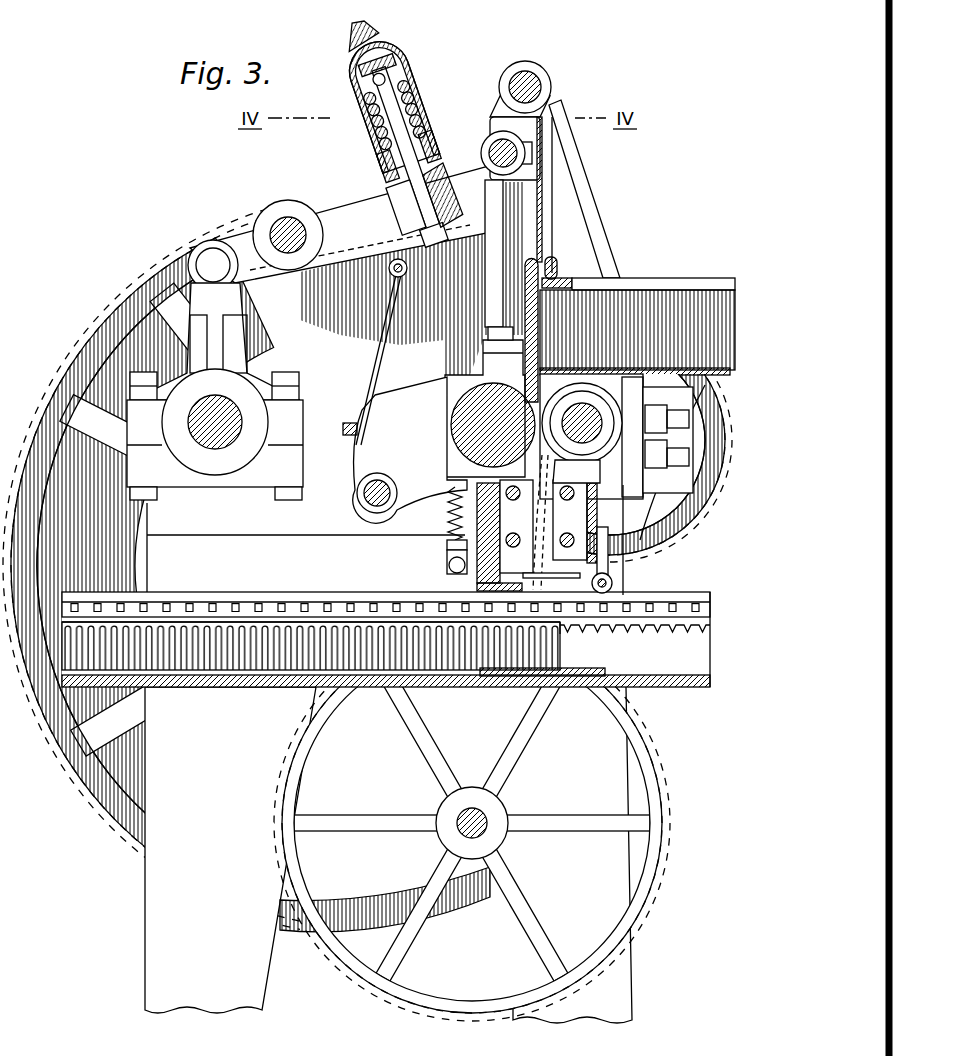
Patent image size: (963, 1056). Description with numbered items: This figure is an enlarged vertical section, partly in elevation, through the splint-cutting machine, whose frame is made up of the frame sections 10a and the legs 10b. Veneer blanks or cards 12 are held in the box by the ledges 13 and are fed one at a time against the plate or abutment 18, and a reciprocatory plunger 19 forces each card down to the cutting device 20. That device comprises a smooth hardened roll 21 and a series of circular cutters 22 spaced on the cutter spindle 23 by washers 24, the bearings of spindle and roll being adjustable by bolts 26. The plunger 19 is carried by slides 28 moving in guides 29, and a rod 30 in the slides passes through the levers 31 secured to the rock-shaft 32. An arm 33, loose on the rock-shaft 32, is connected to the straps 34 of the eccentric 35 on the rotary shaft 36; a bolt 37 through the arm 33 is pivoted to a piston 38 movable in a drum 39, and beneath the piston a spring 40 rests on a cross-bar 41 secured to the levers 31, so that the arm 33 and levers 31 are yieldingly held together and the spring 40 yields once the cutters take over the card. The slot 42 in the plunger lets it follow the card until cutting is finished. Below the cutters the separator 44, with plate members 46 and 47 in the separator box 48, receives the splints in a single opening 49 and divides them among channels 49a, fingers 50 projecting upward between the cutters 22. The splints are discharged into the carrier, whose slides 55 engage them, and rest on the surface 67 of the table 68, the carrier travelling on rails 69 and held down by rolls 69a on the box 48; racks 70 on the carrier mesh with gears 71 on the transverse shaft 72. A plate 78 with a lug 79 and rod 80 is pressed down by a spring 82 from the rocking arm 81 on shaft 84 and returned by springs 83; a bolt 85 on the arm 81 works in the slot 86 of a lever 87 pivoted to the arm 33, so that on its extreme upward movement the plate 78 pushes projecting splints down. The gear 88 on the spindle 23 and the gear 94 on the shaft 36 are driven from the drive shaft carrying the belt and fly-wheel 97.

The frame sections 10a is at (608, 235).
The legs 10b is at (633, 962).
The veneer blanks or cards 12 is at (727, 315).
The ledges 13 is at (693, 276).
The plate or abutment 18 is at (525, 275).
The reciprocatory plunger 19 is at (542, 203).
The cutting device 20 is at (493, 414).
The roll 21 is at (467, 380).
The cutters or knives 22 is at (597, 397).
The cutter shaft or spindle 23 is at (590, 438).
The washers 24 is at (607, 437).
The bolts 26 is at (427, 407).
The slides 28 is at (530, 123).
The guides 29 is at (522, 242).
The rod 30 is at (490, 148).
The arms or levers 31 is at (323, 193).
The rock-shaft 32 is at (310, 230).
The arm 33 is at (240, 232).
The straps of the eccentric 34 is at (237, 302).
The eccentric 35 is at (237, 483).
The rotary shaft 36 is at (233, 433).
The bolt 37 is at (440, 157).
The piston or follower 38 is at (398, 53).
The drum or casing 39 is at (350, 97).
The spring 40 is at (417, 100).
The cross-bar 41 is at (380, 167).
The slot 42 is at (557, 255).
The separator 44 is at (516, 526).
The plate member 46 is at (535, 526).
The plate member 47 is at (570, 520).
The separator box 48 is at (604, 523).
The single way or opening 49 is at (586, 480).
The channels or ways 49a is at (552, 584).
The fingers or extensions 50 is at (533, 450).
The slides or splint-engaging devices 55 is at (233, 607).
The table surface 67 is at (603, 670).
The table 68 is at (697, 687).
The vertical rails 69 is at (713, 643).
The rolls 69a is at (617, 570).
The racks 70 is at (723, 613).
The gears 71 is at (657, 887).
The transverse shaft 72 is at (490, 813).
The plate 78 is at (477, 587).
The lug 79 is at (443, 563).
The rod 80 is at (447, 548).
The rocking arm 81 is at (360, 468).
The spring 82 is at (448, 508).
The return springs 83 is at (497, 533).
The shaft 84 is at (368, 497).
The bolt 85 is at (350, 417).
The slot 86 is at (360, 367).
The lever 87 is at (365, 352).
The gear 88 is at (727, 477).
The gear 94 is at (92, 300).
The belt and fly-wheel 97 is at (73, 747).